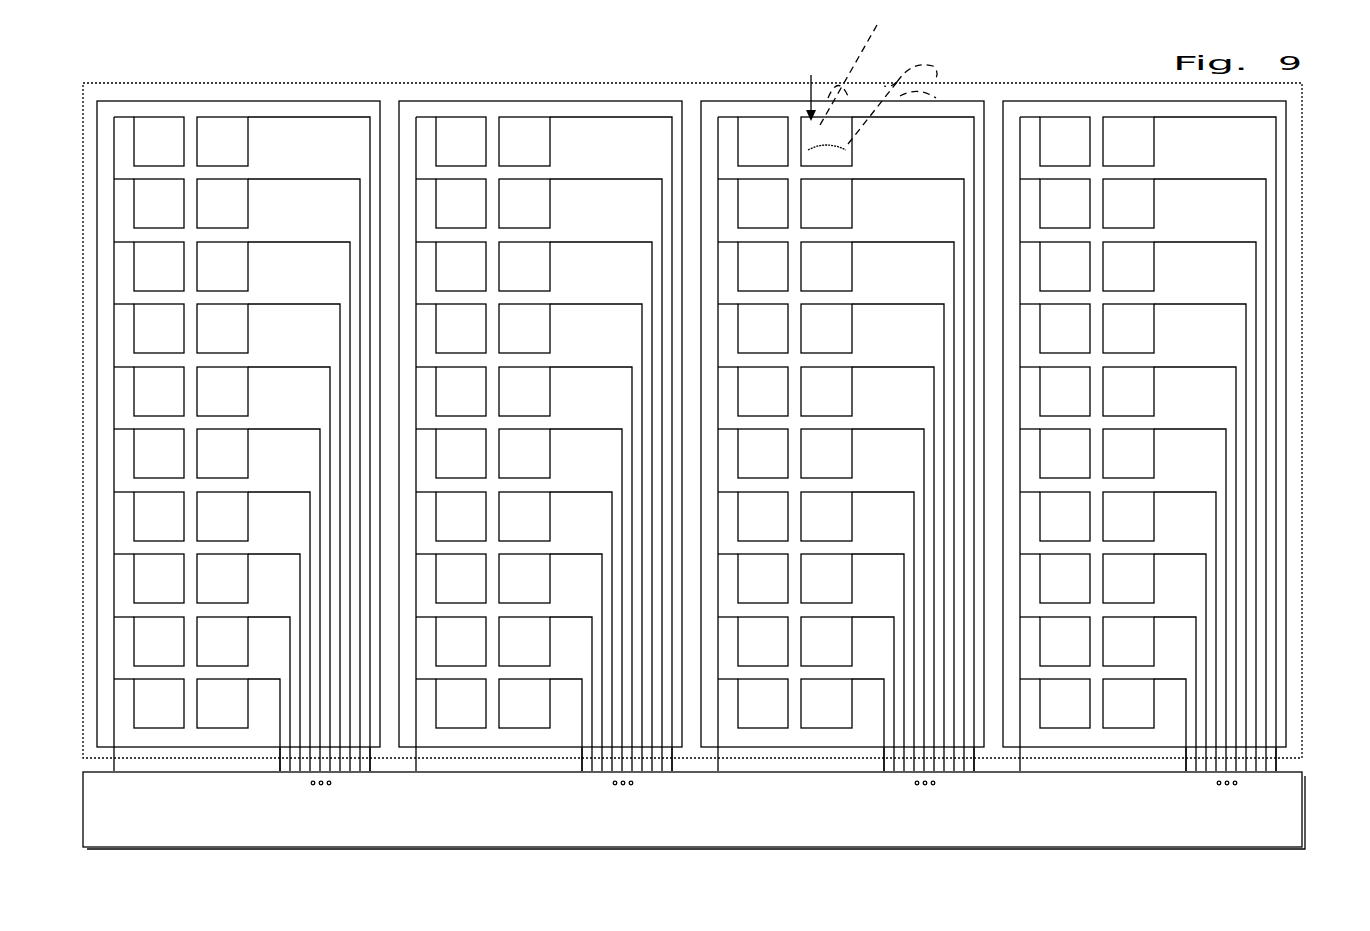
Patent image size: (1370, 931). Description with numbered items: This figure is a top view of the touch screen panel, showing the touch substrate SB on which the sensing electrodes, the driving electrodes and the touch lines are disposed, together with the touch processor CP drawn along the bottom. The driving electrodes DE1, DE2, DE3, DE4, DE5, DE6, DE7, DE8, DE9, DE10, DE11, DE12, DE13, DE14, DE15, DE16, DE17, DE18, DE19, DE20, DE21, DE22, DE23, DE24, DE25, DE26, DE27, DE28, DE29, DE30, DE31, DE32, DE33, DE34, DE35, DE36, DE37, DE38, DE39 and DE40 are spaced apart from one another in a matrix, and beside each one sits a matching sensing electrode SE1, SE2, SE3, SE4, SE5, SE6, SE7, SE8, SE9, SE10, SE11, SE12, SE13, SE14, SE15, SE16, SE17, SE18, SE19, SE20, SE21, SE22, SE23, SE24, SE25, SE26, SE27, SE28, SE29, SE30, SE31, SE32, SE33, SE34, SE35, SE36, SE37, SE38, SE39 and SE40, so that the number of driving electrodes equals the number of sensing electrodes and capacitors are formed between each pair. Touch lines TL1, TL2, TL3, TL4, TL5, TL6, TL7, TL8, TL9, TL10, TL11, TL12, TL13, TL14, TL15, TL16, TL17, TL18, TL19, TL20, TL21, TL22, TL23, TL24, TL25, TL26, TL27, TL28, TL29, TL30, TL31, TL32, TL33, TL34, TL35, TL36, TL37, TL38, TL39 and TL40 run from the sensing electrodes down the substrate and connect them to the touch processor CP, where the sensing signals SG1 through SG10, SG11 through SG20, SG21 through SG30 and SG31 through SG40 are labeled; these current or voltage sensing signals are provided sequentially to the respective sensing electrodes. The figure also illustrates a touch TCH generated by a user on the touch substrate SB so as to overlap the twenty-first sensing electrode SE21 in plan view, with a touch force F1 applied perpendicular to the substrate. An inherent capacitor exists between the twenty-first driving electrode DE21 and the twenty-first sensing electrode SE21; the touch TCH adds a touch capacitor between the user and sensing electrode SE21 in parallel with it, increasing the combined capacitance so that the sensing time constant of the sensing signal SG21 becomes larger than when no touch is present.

The driving electrode DE1 is at (142, 153).
The driving electrode DE2 is at (142, 215).
The driving electrode DE3 is at (142, 278).
The driving electrode DE4 is at (142, 340).
The driving electrode DE5 is at (142, 403).
The driving electrode DE6 is at (142, 465).
The driving electrode DE7 is at (142, 528).
The driving electrode DE8 is at (142, 590).
The driving electrode DE9 is at (142, 653).
The driving electrode DE10 is at (142, 715).
The driving electrode DE11 is at (444, 153).
The driving electrode DE12 is at (444, 215).
The driving electrode DE13 is at (444, 278).
The driving electrode DE14 is at (444, 340).
The driving electrode DE15 is at (444, 403).
The driving electrode DE16 is at (444, 465).
The driving electrode DE17 is at (444, 528).
The driving electrode DE18 is at (444, 590).
The driving electrode DE19 is at (444, 653).
The driving electrode DE20 is at (444, 715).
The 21st driving electrode DE21 is at (746, 153).
The driving electrode DE22 is at (746, 215).
The driving electrode DE23 is at (746, 278).
The driving electrode DE24 is at (746, 340).
The driving electrode DE25 is at (746, 403).
The driving electrode DE26 is at (746, 465).
The driving electrode DE27 is at (746, 528).
The driving electrode DE28 is at (746, 590).
The driving electrode DE29 is at (746, 653).
The driving electrode DE30 is at (746, 715).
The driving electrode DE31 is at (1048, 153).
The driving electrode DE32 is at (1048, 215).
The driving electrode DE33 is at (1048, 278).
The driving electrode DE34 is at (1048, 340).
The driving electrode DE35 is at (1048, 403).
The driving electrode DE36 is at (1048, 465).
The driving electrode DE37 is at (1048, 528).
The driving electrode DE38 is at (1048, 590).
The driving electrode DE39 is at (1048, 653).
The driving electrode DE40 is at (1048, 715).
The sensing electrode SE1 is at (205, 153).
The sensing electrode SE2 is at (205, 215).
The sensing electrode SE3 is at (205, 278).
The sensing electrode SE4 is at (205, 340).
The sensing electrode SE5 is at (205, 403).
The sensing electrode SE6 is at (205, 465).
The sensing electrode SE7 is at (205, 528).
The sensing electrode SE8 is at (205, 590).
The sensing electrode SE9 is at (205, 653).
The sensing electrode SE10 is at (205, 715).
The sensing electrode SE11 is at (507, 153).
The sensing electrode SE12 is at (507, 215).
The sensing electrode SE13 is at (507, 278).
The sensing electrode SE14 is at (507, 340).
The sensing electrode SE15 is at (507, 403).
The sensing electrode SE16 is at (507, 465).
The sensing electrode SE17 is at (507, 528).
The sensing electrode SE18 is at (507, 590).
The sensing electrode SE19 is at (507, 653).
The sensing electrode SE20 is at (507, 715).
The 21st sensing electrode SE21 is at (809, 153).
The sensing electrode SE22 is at (809, 215).
The sensing electrode SE23 is at (809, 278).
The sensing electrode SE24 is at (809, 340).
The sensing electrode SE25 is at (809, 403).
The sensing electrode SE26 is at (809, 465).
The sensing electrode SE27 is at (809, 528).
The sensing electrode SE28 is at (809, 590).
The sensing electrode SE29 is at (809, 653).
The sensing electrode SE30 is at (809, 715).
The sensing electrode SE31 is at (1111, 153).
The sensing electrode SE32 is at (1111, 215).
The sensing electrode SE33 is at (1111, 278).
The sensing electrode SE34 is at (1111, 340).
The sensing electrode SE35 is at (1111, 403).
The sensing electrode SE36 is at (1111, 465).
The sensing electrode SE37 is at (1111, 528).
The sensing electrode SE38 is at (1111, 590).
The sensing electrode SE39 is at (1111, 653).
The sensing electrode SE40 is at (1111, 715).
The touch line TL1 is at (309, 444).
The touch line TL2 is at (304, 475).
The touch line TL3 is at (299, 506).
The touch line TL4 is at (294, 537).
The touch line TL5 is at (289, 569).
The touch line TL6 is at (284, 600).
The touch line TL7 is at (279, 631).
The touch line TL8 is at (274, 662).
The touch line TL9 is at (269, 694).
The touch line TL10 is at (264, 725).
The touch line TL11 is at (611, 444).
The touch line TL12 is at (606, 475).
The touch line TL13 is at (601, 506).
The touch line TL14 is at (596, 537).
The touch line TL15 is at (591, 569).
The touch line TL16 is at (586, 600).
The touch line TL17 is at (581, 631).
The touch line TL18 is at (576, 662).
The touch line TL19 is at (571, 694).
The touch line TL20 is at (566, 725).
The touch line TL21 is at (913, 444).
The touch line TL22 is at (908, 475).
The touch line TL23 is at (903, 506).
The touch line TL24 is at (898, 537).
The touch line TL25 is at (893, 569).
The touch line TL26 is at (888, 600).
The touch line TL27 is at (883, 631).
The touch line TL28 is at (878, 662).
The touch line TL29 is at (873, 694).
The touch line TL30 is at (868, 725).
The touch line TL31 is at (1215, 444).
The touch line TL32 is at (1210, 475).
The touch line TL33 is at (1205, 506).
The touch line TL34 is at (1200, 537).
The touch line TL35 is at (1195, 569).
The touch line TL36 is at (1190, 600).
The touch line TL37 is at (1185, 631).
The touch line TL38 is at (1180, 662).
The touch line TL39 is at (1175, 694).
The touch line TL40 is at (1170, 725).
The sensing signal SG1 is at (278, 772).
The sensing signal SG10 is at (370, 772).
The sensing signal SG11 is at (580, 772).
The sensing signal SG20 is at (672, 772).
The sensing signal SG21 is at (882, 772).
The sensing signal SG30 is at (974, 772).
The sensing signal SG31 is at (1184, 772).
The sensing signal SG40 is at (1276, 772).
The touch processor CP is at (1306, 815).
The touch force F1 is at (813, 85).
The touch substrate SB is at (953, 84).
The touch TCH is at (829, 156).